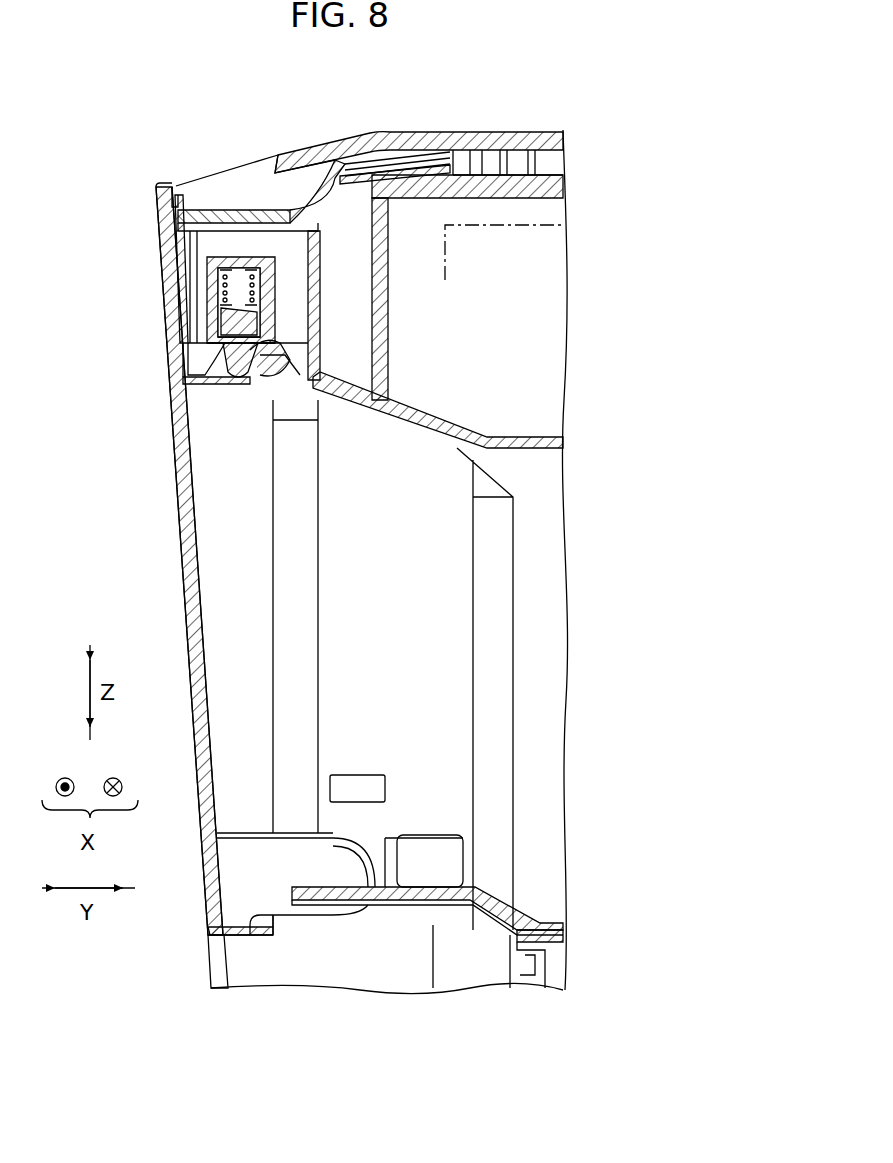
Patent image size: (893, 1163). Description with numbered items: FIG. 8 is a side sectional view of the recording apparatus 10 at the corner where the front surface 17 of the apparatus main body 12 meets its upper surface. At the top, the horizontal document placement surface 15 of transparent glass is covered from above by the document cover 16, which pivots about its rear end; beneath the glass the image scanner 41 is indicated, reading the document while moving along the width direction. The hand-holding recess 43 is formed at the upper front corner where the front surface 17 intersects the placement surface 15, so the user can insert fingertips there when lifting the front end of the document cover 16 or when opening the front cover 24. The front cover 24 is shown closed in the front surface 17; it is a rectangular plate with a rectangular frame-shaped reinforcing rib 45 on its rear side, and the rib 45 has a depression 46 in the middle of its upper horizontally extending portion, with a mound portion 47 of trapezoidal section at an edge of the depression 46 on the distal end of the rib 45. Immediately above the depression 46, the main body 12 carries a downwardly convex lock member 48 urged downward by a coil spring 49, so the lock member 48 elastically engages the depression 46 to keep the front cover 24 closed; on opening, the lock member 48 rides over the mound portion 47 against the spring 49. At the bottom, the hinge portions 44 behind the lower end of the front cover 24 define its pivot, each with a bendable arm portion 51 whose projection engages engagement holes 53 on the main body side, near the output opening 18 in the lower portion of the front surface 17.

The recording apparatus 10 is at (210, 121).
The apparatus main body 12 is at (186, 570).
The document placement surface 15 is at (480, 164).
The document cover 16 is at (404, 132).
The front surface 17 is at (174, 442).
The output opening 18 is at (248, 960).
The front cover 24 is at (178, 513).
The image scanner 41 is at (458, 290).
The hand-holding recess 43 is at (231, 182).
The hinge portions 44 is at (268, 862).
The reinforcing rib 45 is at (199, 400).
The depression 46 is at (192, 377).
The mound portion 47 is at (270, 343).
The lock member 48 is at (234, 364).
The coil spring 49 is at (223, 299).
The arm portion 51 is at (383, 837).
The engagement holes 53 is at (380, 795).